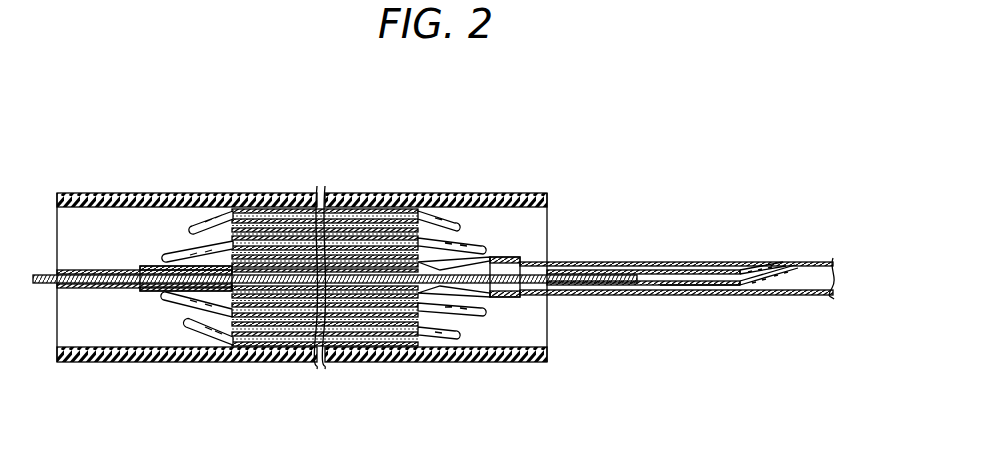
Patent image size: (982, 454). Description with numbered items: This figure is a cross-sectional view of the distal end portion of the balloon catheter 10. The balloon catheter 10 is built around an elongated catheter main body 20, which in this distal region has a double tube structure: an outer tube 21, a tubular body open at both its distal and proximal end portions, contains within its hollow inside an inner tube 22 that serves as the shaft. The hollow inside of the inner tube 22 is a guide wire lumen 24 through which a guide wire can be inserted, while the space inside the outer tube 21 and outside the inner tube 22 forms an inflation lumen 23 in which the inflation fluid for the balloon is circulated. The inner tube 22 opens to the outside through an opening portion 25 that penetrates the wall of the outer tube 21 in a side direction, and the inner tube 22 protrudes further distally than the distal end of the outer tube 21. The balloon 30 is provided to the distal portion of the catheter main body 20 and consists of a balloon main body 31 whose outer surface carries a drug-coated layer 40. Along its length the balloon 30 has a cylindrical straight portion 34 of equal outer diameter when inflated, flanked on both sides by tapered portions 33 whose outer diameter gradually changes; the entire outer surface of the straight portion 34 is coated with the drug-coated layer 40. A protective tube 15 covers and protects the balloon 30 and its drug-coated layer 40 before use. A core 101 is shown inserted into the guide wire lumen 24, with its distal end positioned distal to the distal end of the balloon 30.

The balloon catheter 10 is at (186, 138).
The protective tube 15 is at (240, 352).
The catheter main body 20 is at (702, 185).
The outer tube 21 is at (688, 266).
The inner tube 22 is at (653, 268).
The inflation lumen 23 is at (790, 294).
The guide wire lumen 24 is at (695, 287).
The opening portion 25 is at (773, 265).
The balloon 30 is at (413, 137).
The balloon main body 31 is at (400, 215).
The tapered portions 33 is at (168, 303).
The straight portion 34 is at (352, 343).
The drug-coated layer 40 is at (357, 210).
The core 101 is at (600, 283).